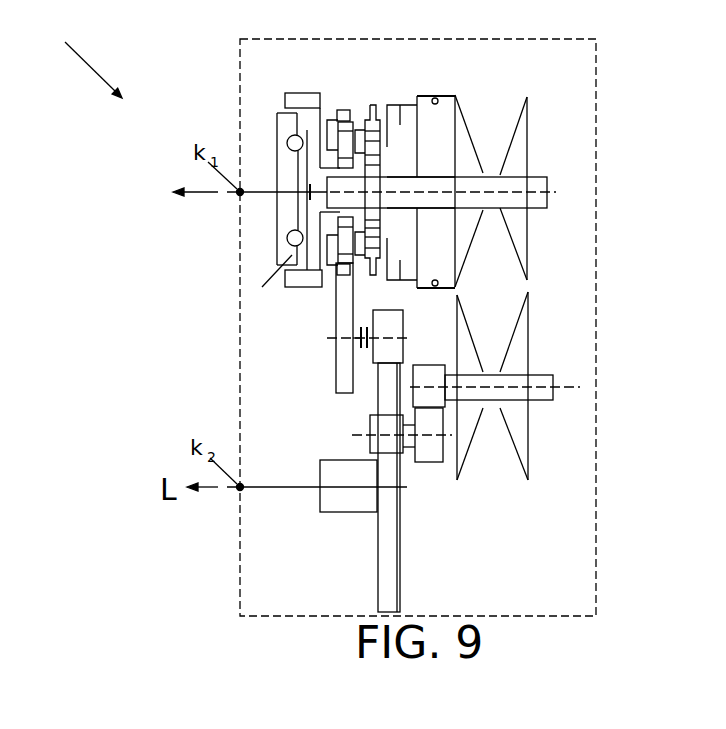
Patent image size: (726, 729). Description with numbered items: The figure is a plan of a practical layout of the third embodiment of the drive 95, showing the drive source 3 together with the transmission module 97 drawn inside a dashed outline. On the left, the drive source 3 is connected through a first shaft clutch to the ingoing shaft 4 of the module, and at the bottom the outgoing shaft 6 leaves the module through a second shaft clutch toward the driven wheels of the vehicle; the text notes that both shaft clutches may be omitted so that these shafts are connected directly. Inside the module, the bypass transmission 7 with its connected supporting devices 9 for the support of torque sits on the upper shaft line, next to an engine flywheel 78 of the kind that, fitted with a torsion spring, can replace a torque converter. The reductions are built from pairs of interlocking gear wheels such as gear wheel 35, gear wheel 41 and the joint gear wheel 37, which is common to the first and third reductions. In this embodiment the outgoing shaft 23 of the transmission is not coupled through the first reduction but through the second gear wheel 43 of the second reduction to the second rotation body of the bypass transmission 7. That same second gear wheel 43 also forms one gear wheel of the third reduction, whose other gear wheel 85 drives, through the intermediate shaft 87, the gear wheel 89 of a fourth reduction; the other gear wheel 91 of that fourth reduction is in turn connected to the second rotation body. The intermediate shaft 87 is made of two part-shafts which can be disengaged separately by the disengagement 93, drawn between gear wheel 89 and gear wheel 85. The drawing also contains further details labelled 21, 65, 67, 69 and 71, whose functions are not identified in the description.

The drive 95 is at (86, 57).
The transmission module 97 is at (512, 38).
The drive source 3 is at (198, 193).
The ingoing shaft 4 is at (258, 197).
The outgoing shaft 6 is at (257, 489).
The bypass transmission 7 is at (345, 92).
The supporting devices 9 is at (293, 90).
The first pulley shaft 21 is at (541, 205).
The outgoing shaft of the transmission 23 is at (550, 402).
The gear wheel 35 is at (433, 395).
The joint gear wheel 37 is at (437, 445).
The gear wheel 41 is at (365, 437).
The second gear wheel of the second reduction 43 is at (390, 570).
The clutch hub 65 is at (372, 92).
The clutch disc 67 is at (371, 104).
The housing 69 is at (418, 156).
The cover 71 is at (394, 102).
The engine flywheel 78 is at (278, 163).
The gear wheel of the third reduction 85 is at (387, 325).
The intermediate shaft 87 is at (352, 341).
The gear wheel of the fourth reduction 89 is at (343, 377).
The gear wheel of the fourth reduction 91 is at (340, 265).
The disengagement 93 is at (363, 315).